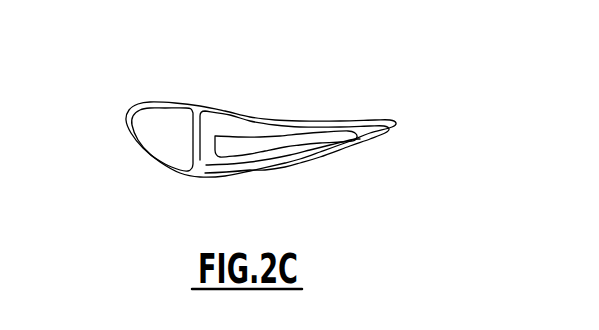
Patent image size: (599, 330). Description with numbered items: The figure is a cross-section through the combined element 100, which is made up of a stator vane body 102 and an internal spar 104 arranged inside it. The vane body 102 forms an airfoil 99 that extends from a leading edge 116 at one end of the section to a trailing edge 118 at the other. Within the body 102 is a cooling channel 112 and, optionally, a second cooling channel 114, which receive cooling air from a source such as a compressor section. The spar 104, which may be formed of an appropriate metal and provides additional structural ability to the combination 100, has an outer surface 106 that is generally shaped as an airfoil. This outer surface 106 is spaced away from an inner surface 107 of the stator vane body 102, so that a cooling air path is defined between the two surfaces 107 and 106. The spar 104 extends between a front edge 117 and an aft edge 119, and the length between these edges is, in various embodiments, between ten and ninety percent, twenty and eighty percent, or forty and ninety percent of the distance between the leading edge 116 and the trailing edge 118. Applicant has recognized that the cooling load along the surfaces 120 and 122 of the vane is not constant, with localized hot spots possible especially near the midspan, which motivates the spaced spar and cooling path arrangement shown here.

The combined element 100 is at (110, 78).
The airfoil 99 is at (144, 152).
The stator vane body 102 is at (191, 180).
The internal spar 104 is at (303, 144).
The outer surface 106 is at (250, 134).
The inner surface 107 is at (234, 171).
The cooling channel 112 is at (212, 127).
The second cooling channel 114 is at (166, 122).
The leading edge 116 is at (122, 123).
The front edge 117 is at (191, 163).
The trailing edge 118 is at (398, 123).
The aft edge 119 is at (330, 138).
The surface 120 is at (295, 122).
The surface 122 is at (297, 163).